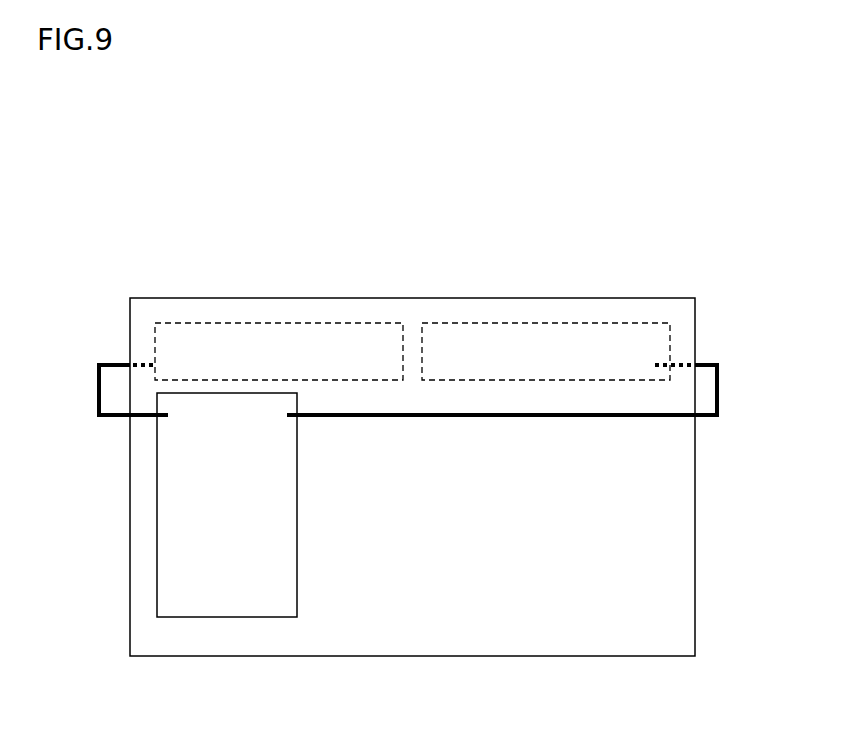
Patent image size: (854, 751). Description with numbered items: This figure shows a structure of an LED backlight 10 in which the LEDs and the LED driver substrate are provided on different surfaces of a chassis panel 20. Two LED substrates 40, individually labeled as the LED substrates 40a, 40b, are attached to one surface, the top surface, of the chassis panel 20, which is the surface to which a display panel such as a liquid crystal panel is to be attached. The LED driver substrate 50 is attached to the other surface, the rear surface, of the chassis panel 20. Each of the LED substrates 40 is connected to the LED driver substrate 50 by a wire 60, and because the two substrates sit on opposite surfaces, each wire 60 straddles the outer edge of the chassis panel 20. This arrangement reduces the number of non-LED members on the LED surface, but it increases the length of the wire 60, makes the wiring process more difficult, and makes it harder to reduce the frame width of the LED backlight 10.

The LED backlight 10 is at (670, 205).
The chassis panel 20 is at (572, 645).
The LED substrates 40 is at (527, 198).
The LED substrate 40a is at (272, 336).
The LED substrate 40b is at (540, 336).
The LED driver substrate 50 is at (170, 542).
The wire 60 is at (99, 392).